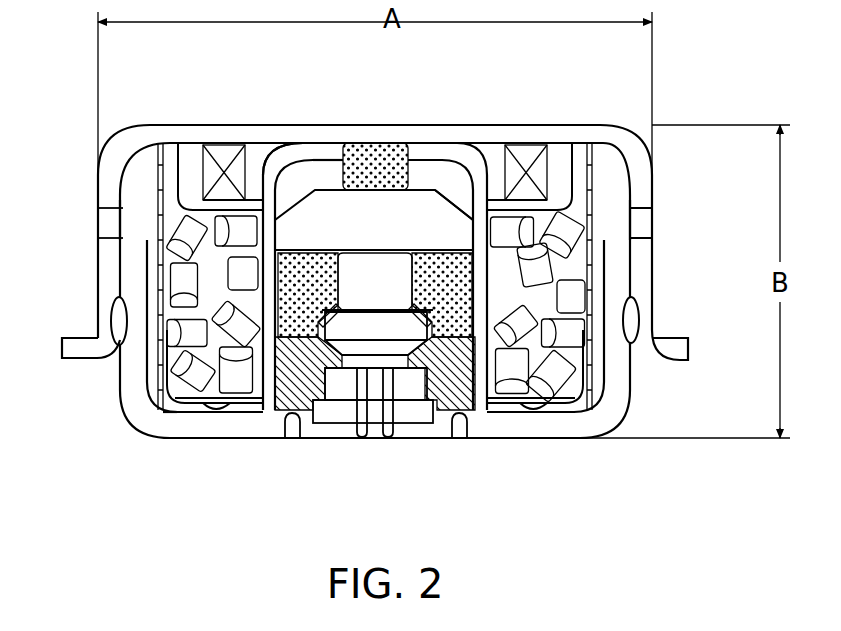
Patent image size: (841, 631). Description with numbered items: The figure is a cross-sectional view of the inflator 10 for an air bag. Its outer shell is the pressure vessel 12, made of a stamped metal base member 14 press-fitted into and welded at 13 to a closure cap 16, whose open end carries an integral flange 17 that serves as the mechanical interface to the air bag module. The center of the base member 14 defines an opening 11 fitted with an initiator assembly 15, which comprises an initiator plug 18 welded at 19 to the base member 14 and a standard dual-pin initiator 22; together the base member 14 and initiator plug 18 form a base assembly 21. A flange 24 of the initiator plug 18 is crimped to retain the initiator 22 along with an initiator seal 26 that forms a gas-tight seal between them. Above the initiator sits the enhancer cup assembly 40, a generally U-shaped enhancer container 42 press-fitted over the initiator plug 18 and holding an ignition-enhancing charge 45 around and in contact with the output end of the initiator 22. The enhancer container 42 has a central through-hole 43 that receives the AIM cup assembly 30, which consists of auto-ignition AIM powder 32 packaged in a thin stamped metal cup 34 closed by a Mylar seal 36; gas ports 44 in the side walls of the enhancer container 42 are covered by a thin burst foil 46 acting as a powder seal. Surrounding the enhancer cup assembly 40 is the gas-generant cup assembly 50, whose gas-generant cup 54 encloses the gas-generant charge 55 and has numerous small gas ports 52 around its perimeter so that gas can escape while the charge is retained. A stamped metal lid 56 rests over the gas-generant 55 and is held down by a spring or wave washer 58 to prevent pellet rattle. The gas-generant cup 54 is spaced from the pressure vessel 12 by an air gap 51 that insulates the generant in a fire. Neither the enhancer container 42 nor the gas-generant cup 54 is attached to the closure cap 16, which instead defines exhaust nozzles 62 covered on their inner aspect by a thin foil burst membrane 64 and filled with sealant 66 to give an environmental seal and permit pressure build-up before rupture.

The inflator 10 is at (247, 104).
The opening 11 is at (298, 438).
The pressure vessel 12 is at (668, 308).
The weld 13 is at (107, 360).
The base member 14 is at (535, 447).
The initiator assembly 15 is at (362, 452).
The closure cap 16 is at (658, 242).
The flange 17 is at (690, 347).
The initiator plug 18 is at (313, 432).
The weld 19 is at (461, 449).
The base assembly 21 is at (443, 452).
The initiator 22 is at (372, 340).
The flange 24 is at (300, 312).
The initiator seal 26 is at (478, 372).
The AIM cup assembly 30 is at (366, 152).
The AIM powder 32 is at (405, 170).
The thin stamped metal cup 34 is at (463, 198).
The Mylar seal 36 is at (386, 197).
The enhancer cup assembly 40 is at (262, 150).
The enhancer container 42 is at (303, 143).
The central through-hole 43 is at (342, 143).
The gas ports 44 is at (632, 208).
The ignition-enhancing charge 45 is at (290, 318).
The burst foil 46 is at (495, 373).
The gas-generant cup assembly 50 is at (178, 395).
The air gap 51 is at (113, 320).
The gas ports 52 is at (160, 215).
The gas-generant cup 54 is at (148, 378).
The gas-generant charge 55 is at (165, 412).
The lid 56 is at (532, 198).
The wave washer 58 is at (196, 160).
The exhaust nozzles 62 is at (107, 218).
The burst membrane 64 is at (130, 216).
The sealant 66 is at (107, 227).